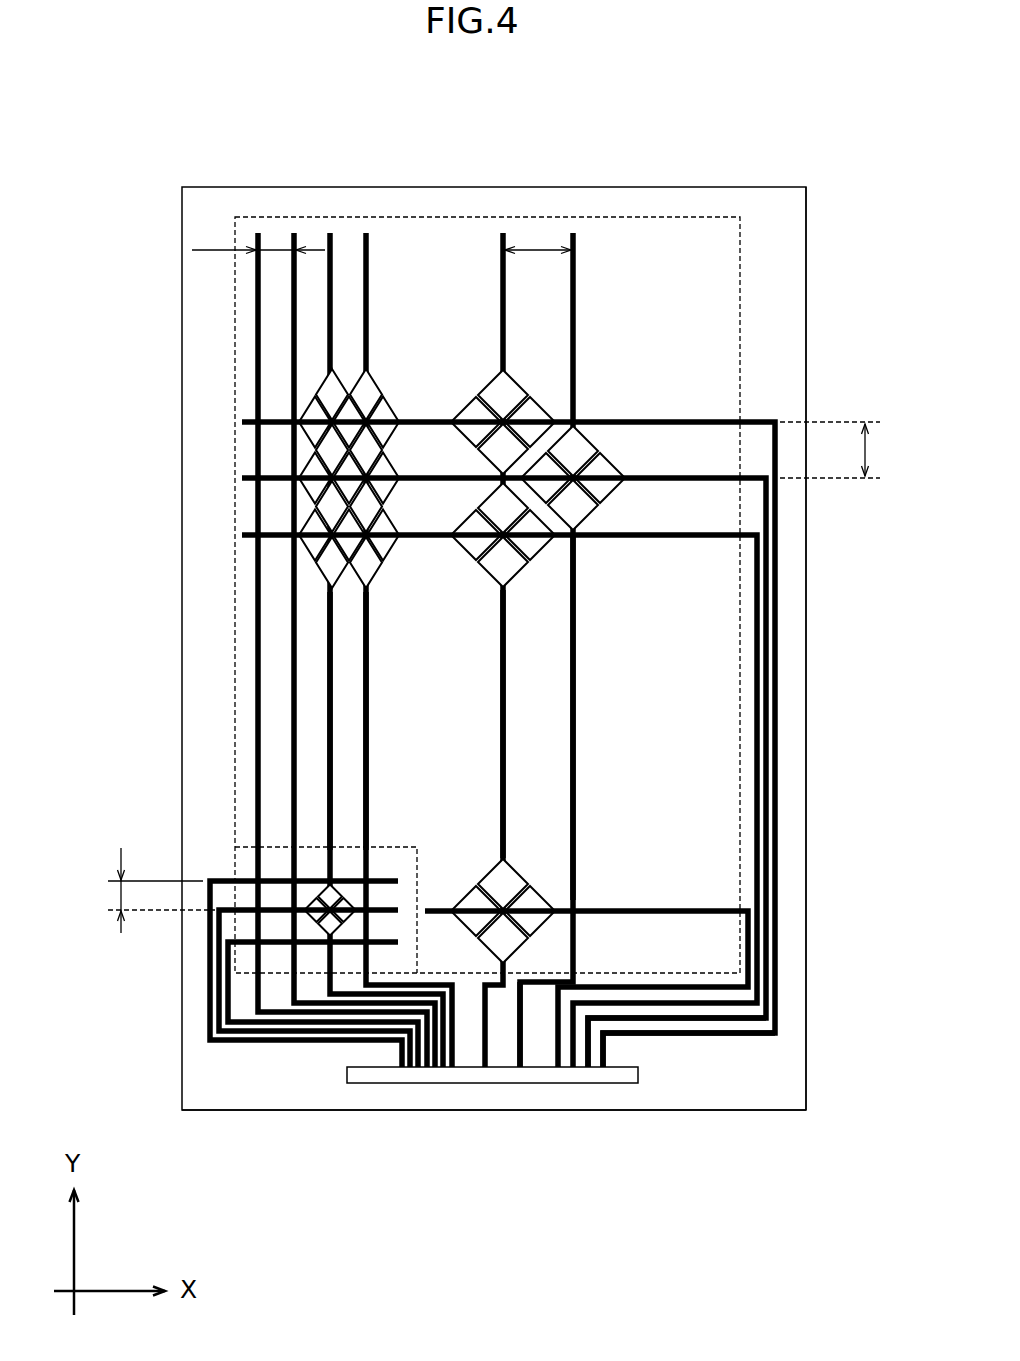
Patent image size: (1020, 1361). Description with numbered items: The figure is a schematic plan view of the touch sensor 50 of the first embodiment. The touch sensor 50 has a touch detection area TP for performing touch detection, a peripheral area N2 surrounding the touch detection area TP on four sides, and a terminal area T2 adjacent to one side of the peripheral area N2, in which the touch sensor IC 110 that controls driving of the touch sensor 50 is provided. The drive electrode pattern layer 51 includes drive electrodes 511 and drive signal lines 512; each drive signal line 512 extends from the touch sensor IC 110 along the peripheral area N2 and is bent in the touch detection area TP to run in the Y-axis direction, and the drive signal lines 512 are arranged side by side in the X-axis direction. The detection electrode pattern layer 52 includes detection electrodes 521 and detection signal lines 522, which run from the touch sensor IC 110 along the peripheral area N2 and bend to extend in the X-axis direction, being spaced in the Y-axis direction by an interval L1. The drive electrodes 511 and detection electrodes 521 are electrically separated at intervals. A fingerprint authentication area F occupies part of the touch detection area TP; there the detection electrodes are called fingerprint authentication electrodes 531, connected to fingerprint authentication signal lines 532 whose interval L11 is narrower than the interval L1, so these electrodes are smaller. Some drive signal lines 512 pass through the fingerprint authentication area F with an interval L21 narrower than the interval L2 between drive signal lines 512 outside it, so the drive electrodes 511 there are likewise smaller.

The touch sensor 50 is at (818, 157).
The drive electrode pattern layer 51 is at (525, 1046).
The detection electrode pattern layer 52 is at (698, 1046).
The touch sensor IC 110 is at (394, 1084).
The drive electrode 511 is at (320, 392).
The drive signal line 512 is at (501, 660).
The detection electrode 521 is at (352, 405).
The detection signal line 522 is at (692, 420).
The fingerprint authentication electrode 531 is at (305, 908).
The fingerprint authentication signal line 532 is at (380, 877).
The touch detection area TP is at (742, 252).
The peripheral area N2 is at (790, 317).
The terminal area T2 is at (773, 1062).
The fingerprint authentication area F is at (417, 847).
The interval between detection signal lines L1 is at (838, 450).
The interval between drive signal lines L2 is at (538, 238).
The interval between fingerprint authentication signal lines L11 is at (144, 890).
The interval between drive signal lines in fingerprint authentication area L21 is at (258, 238).